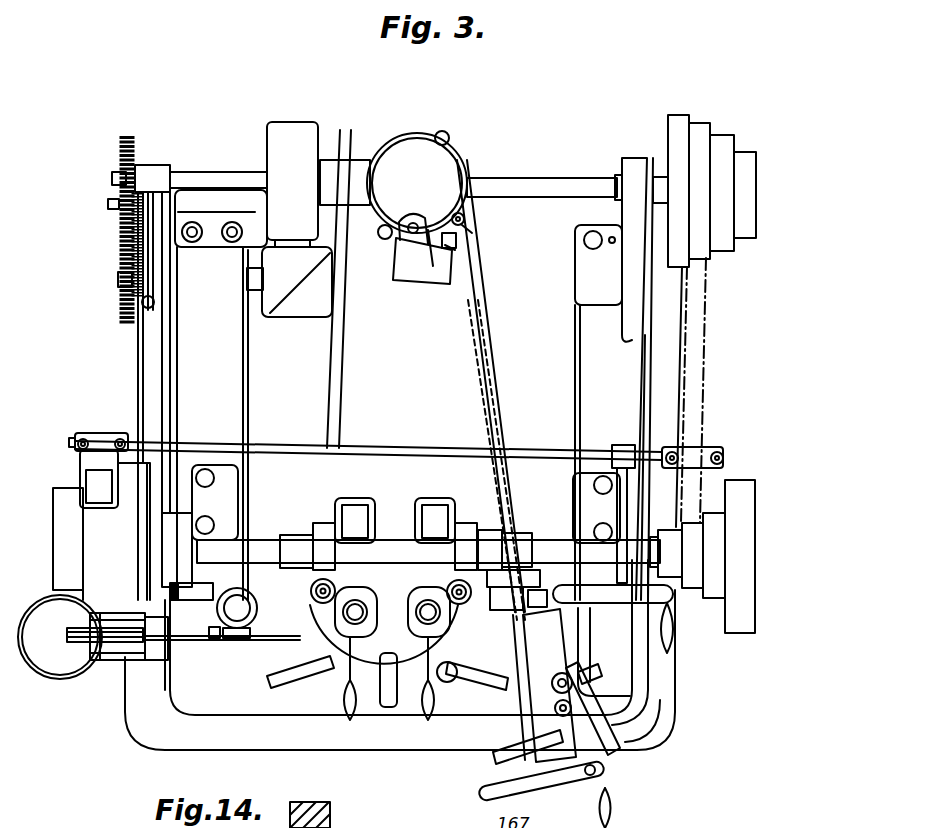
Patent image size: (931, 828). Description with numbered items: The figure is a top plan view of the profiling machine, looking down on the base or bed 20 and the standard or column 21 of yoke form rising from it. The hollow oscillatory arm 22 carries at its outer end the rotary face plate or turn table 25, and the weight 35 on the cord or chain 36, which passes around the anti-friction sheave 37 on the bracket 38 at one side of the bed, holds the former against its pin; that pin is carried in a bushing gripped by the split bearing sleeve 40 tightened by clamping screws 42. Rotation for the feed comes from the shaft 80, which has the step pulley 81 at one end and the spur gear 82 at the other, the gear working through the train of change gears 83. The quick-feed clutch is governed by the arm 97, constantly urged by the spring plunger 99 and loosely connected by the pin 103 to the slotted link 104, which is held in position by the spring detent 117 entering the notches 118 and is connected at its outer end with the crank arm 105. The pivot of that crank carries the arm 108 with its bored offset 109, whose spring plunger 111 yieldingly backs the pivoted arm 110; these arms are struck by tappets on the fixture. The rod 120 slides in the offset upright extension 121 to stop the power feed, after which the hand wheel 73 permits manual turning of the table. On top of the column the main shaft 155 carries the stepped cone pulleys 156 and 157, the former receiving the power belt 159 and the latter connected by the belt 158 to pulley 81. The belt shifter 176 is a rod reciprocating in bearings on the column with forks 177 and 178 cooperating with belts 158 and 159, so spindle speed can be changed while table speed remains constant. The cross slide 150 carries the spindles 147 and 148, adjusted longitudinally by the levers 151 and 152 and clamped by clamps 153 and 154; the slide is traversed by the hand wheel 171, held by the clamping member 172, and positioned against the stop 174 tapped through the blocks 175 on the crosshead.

The spur gear 82 is at (124, 137).
The train of change gears 83 is at (127, 237).
The shaft 80 is at (512, 186).
The step pulley 81 is at (744, 193).
The pin 103 is at (468, 220).
The arm 97 is at (474, 229).
The notches 118 is at (457, 240).
The spring dog or detent 117 is at (452, 249).
The spring plunger 99 is at (441, 272).
The link 104 is at (477, 330).
The belt 158 is at (712, 357).
The oscillatory arm 22 is at (333, 395).
The standard or column 21 is at (414, 379).
The belt shifter 176 is at (521, 448).
The belt shifting fork or fingers 177 is at (720, 450).
The belt shifting fork or fingers 178 is at (70, 458).
The belt 159 is at (98, 488).
The stepped cone pulley 156 is at (70, 553).
The stop 174 is at (218, 595).
The slide 150 is at (318, 545).
The main shaft 155 is at (428, 546).
The blocks 175 is at (533, 522).
The spindle 148 is at (420, 607).
The bearing sleeve 40 is at (257, 618).
The clamping screws 42 is at (213, 638).
The cord or chain 36 is at (190, 641).
The spindle 147 is at (350, 612).
The clamp 153 is at (300, 678).
The bracket 38 is at (125, 656).
The weight 35 is at (62, 660).
The anti-friction roller or sheave 37 is at (84, 648).
The base or bed 20 is at (400, 655).
The clamp 154 is at (463, 676).
The lever 151 is at (345, 705).
The clamping member 172 is at (360, 703).
The lever 152 is at (392, 700).
The face plate or turn table 25 is at (443, 705).
The crank arm 105 is at (500, 736).
The rod 120 is at (556, 678).
The offset upright extension 121 is at (585, 672).
The arm 110 is at (577, 695).
The plunger 111 is at (634, 714).
The bored offset 109 is at (657, 733).
The hand wheel 171 is at (662, 600).
The stepped cone pulley 157 is at (742, 632).
The arm 108 is at (578, 783).
The hand wheel 73 is at (640, 780).